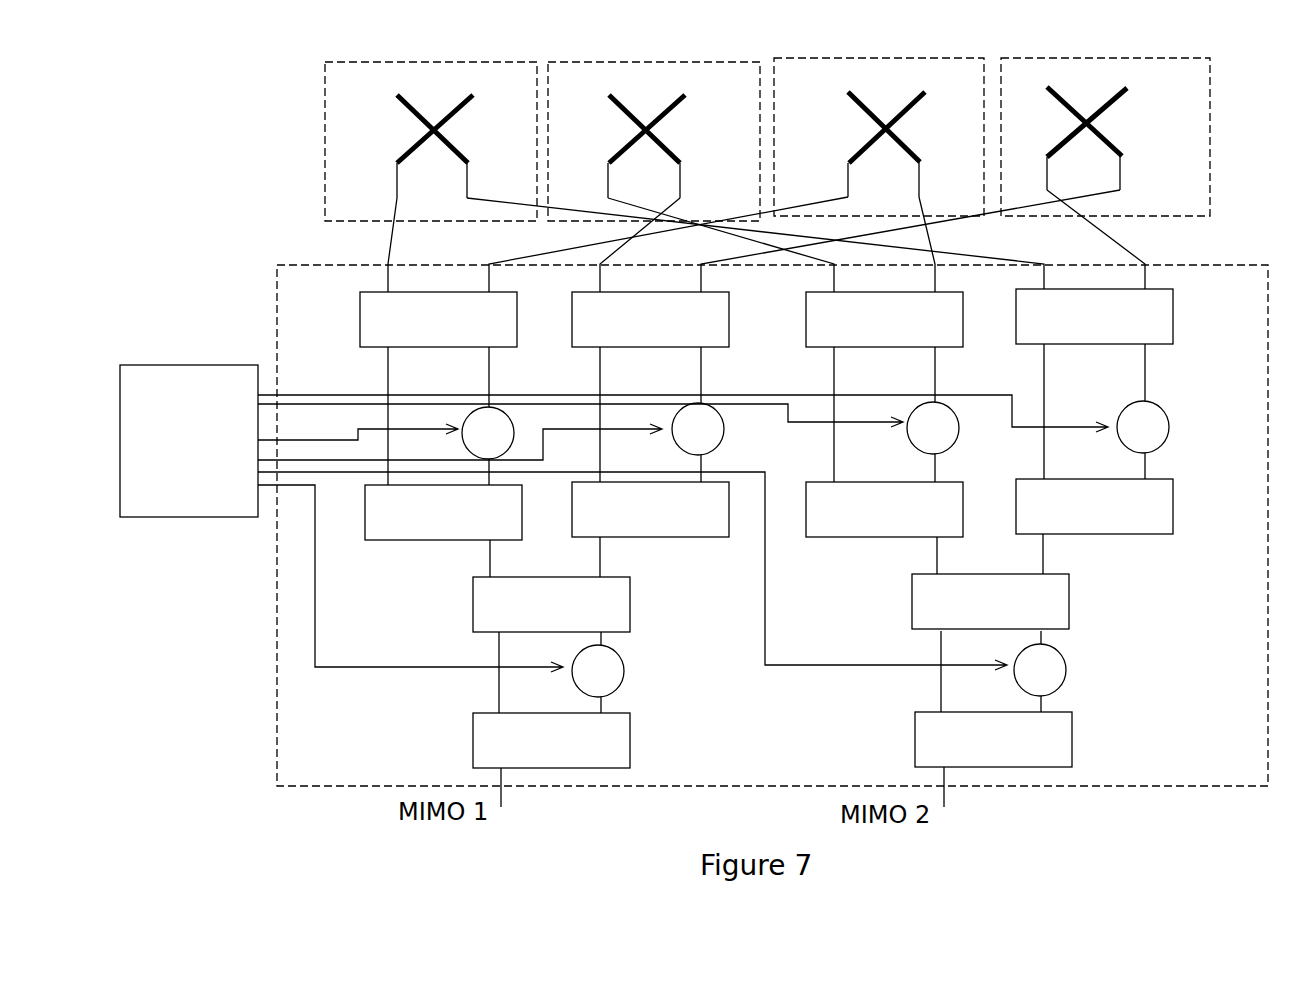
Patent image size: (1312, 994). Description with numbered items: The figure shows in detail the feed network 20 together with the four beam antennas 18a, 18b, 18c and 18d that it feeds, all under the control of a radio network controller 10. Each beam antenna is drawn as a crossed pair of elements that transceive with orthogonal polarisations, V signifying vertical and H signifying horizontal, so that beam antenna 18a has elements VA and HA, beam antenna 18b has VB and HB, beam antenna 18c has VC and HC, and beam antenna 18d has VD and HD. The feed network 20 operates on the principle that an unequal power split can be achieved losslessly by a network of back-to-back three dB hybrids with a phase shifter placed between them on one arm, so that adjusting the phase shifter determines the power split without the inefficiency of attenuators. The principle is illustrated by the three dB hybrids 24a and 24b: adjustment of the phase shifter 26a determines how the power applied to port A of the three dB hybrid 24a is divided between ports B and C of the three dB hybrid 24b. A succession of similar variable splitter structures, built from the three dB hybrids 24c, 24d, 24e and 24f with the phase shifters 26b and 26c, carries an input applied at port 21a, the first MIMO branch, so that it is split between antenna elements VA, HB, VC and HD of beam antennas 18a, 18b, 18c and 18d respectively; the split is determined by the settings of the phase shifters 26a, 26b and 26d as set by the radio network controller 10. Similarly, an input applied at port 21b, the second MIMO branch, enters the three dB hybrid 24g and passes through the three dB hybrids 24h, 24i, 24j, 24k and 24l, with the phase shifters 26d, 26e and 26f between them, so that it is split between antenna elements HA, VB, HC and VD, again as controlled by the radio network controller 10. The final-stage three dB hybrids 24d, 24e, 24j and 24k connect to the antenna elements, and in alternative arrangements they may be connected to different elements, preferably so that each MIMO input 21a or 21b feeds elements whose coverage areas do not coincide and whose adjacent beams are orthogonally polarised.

The radio network controller 10 is at (170, 363).
The beam antenna 18a is at (430, 58).
The beam antenna 18b is at (660, 53).
The beam antenna 18c is at (875, 50).
The beam antenna 18d is at (1112, 50).
The feed network 20 is at (1237, 260).
The connection 21a is at (512, 795).
The connection 21b is at (952, 790).
The 3 dB hybrid 24a is at (467, 732).
The 3 dB hybrid 24b is at (470, 600).
The 3 dB hybrid 24c is at (400, 550).
The 3 dB hybrid 24d is at (359, 322).
The 3 dB hybrid 24e is at (677, 350).
The 3 dB hybrid 24f is at (707, 540).
The 3 dB hybrid 24g is at (912, 730).
The 3 dB hybrid 24h is at (910, 596).
The 3 dB hybrid 24i is at (860, 540).
The 3 dB hybrid 24j is at (803, 342).
The 3 dB hybrid 24k is at (1173, 320).
The 3 dB hybrid 24l is at (1152, 540).
The phase shifter 26a is at (624, 671).
The phase shifter 26b is at (512, 420).
The phase shifter 26c is at (725, 437).
The phase shifter 26d is at (1067, 672).
The phase shifter 26e is at (960, 437).
The phase shifter 26f is at (1166, 412).